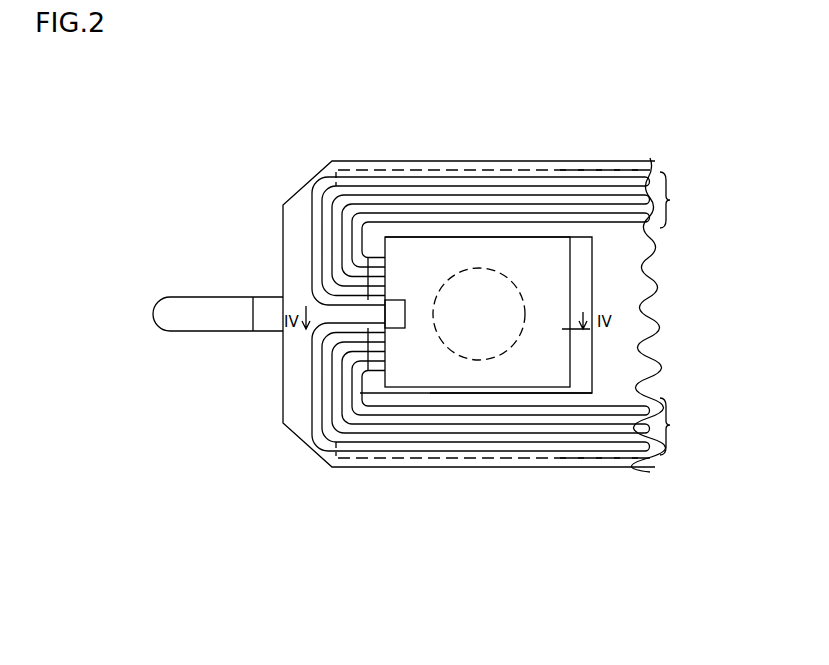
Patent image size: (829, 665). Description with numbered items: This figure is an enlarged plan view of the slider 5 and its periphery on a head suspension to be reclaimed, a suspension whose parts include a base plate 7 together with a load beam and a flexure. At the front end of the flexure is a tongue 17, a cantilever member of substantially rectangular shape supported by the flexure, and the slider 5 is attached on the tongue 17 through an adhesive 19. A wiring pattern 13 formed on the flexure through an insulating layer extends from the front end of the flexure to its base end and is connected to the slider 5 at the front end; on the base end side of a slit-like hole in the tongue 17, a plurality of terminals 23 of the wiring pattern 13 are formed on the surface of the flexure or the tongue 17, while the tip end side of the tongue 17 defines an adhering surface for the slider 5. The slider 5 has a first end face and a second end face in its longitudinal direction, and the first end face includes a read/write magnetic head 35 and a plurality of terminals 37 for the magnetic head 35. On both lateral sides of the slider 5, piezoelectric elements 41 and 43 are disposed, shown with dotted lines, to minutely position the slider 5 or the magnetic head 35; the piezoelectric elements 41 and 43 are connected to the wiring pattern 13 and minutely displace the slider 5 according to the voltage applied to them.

The slider 5 is at (473, 253).
The base plate 7 is at (545, 165).
The wiring pattern 13 is at (679, 313).
The tongue 17 is at (545, 395).
The adhesive 19 is at (470, 362).
The terminals 23 is at (350, 250).
The read/write magnetic head 35 is at (300, 338).
The terminals 37 is at (385, 240).
The piezoelectric element 41 is at (606, 168).
The piezoelectric element 43 is at (606, 462).